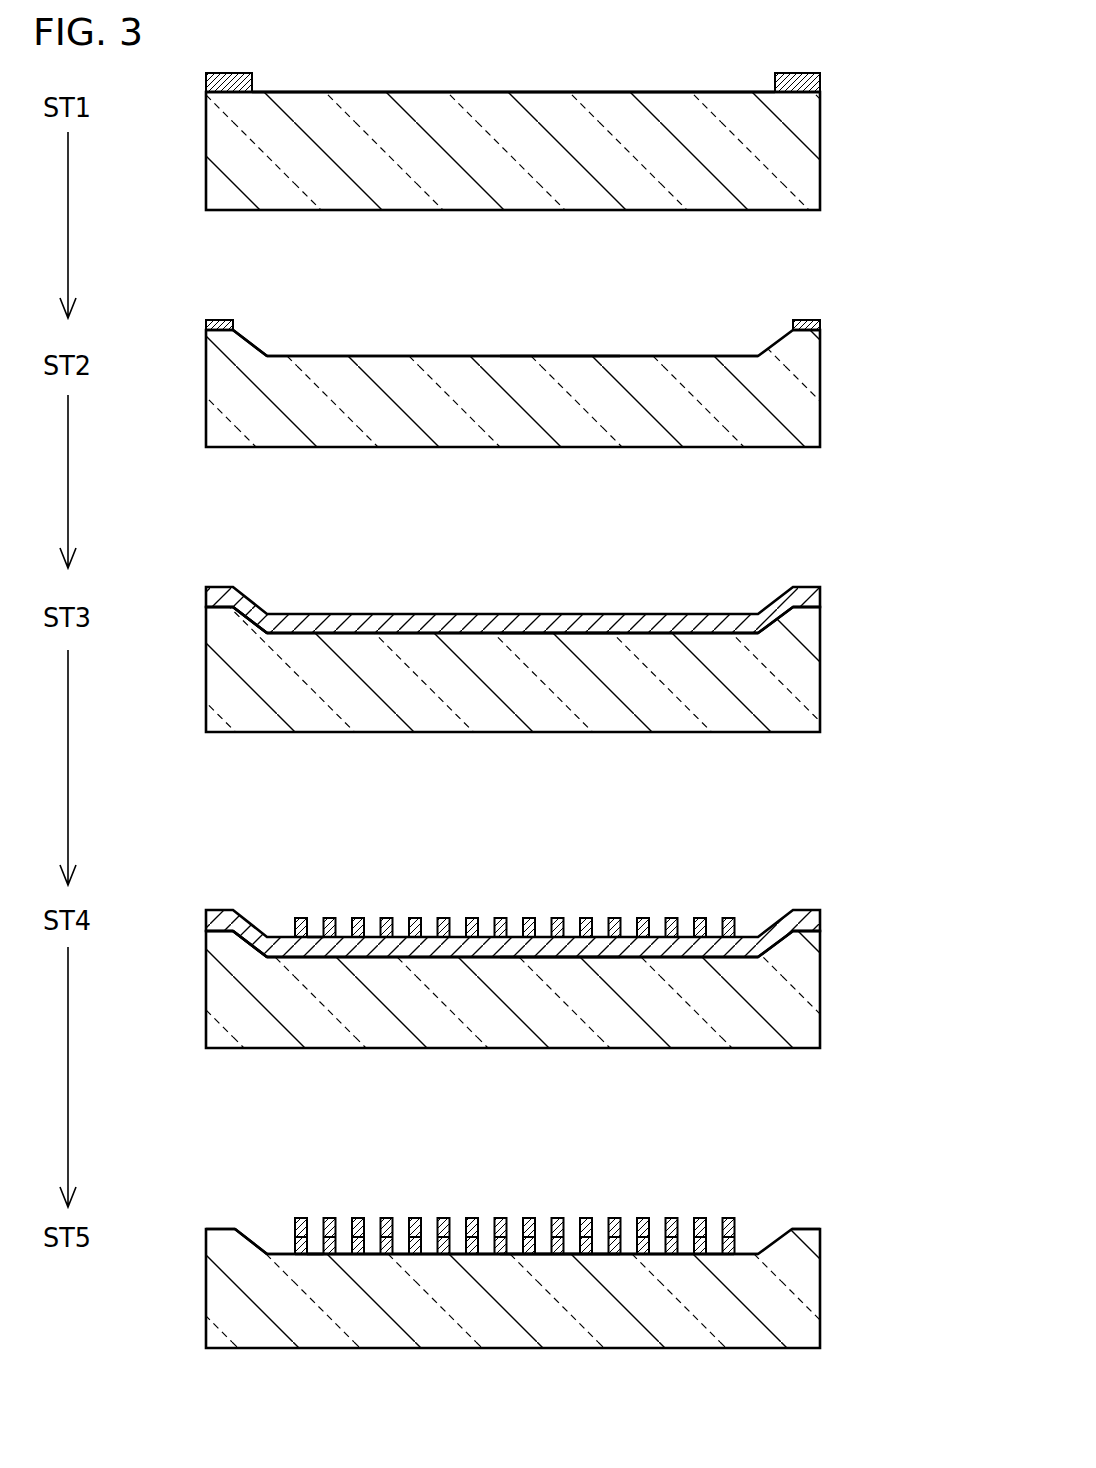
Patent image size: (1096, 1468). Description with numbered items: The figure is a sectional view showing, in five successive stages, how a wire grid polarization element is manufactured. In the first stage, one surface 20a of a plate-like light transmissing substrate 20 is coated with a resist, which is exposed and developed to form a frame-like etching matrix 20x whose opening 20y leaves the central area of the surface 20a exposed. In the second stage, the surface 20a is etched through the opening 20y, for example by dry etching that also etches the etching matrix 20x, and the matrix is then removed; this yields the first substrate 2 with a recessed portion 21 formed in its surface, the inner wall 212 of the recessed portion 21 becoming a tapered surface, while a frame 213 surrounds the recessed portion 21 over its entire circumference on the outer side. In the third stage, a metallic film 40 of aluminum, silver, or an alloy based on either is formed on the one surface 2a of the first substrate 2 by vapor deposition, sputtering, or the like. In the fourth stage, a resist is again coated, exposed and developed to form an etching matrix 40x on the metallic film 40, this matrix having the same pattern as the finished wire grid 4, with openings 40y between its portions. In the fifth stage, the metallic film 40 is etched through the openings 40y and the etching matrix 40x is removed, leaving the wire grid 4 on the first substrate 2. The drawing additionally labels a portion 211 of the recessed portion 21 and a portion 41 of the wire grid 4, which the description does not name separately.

The light transmissing substrate 20 is at (672, 155).
The one surface 20a is at (450, 93).
The etching matrix 20x is at (800, 73).
The opening 20y is at (676, 92).
The first substrate 2 is at (665, 680).
The one surface 2a is at (805, 607).
The recessed portion 21 is at (447, 357).
The bottom surface of recess 211 is at (556, 357).
The inner wall 212 is at (250, 349).
The frame 213 is at (217, 334).
The metallic film 40 is at (367, 622).
The etching matrix 40x is at (298, 918).
The opening 40y is at (313, 918).
The convex portion 41 is at (357, 1250).
The wire grid 4 is at (384, 1250).